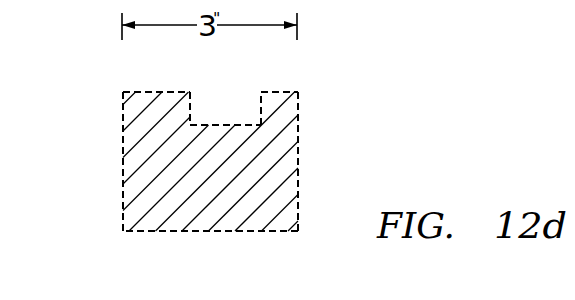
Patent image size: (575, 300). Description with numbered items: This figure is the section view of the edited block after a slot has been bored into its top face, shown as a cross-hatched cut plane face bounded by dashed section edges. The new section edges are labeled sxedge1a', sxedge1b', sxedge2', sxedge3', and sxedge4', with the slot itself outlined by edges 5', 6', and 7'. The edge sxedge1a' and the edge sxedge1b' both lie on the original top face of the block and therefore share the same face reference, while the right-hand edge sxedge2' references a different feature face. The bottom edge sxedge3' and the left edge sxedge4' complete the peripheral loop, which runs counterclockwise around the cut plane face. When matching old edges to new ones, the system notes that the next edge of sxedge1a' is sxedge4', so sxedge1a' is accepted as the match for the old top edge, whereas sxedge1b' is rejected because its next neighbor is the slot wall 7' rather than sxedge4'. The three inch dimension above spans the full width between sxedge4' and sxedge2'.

The new section edge sxedge1a' is at (102, 65).
The new section edge sxedge1b' is at (334, 63).
The new section edge sxedge2' is at (346, 161).
The new section edge sxedge3' is at (210, 249).
The new section edge sxedge4' is at (76, 161).
The left notch wall 5' is at (200, 108).
The notch bottom edge 6' is at (225, 137).
The right notch wall 7' is at (252, 108).